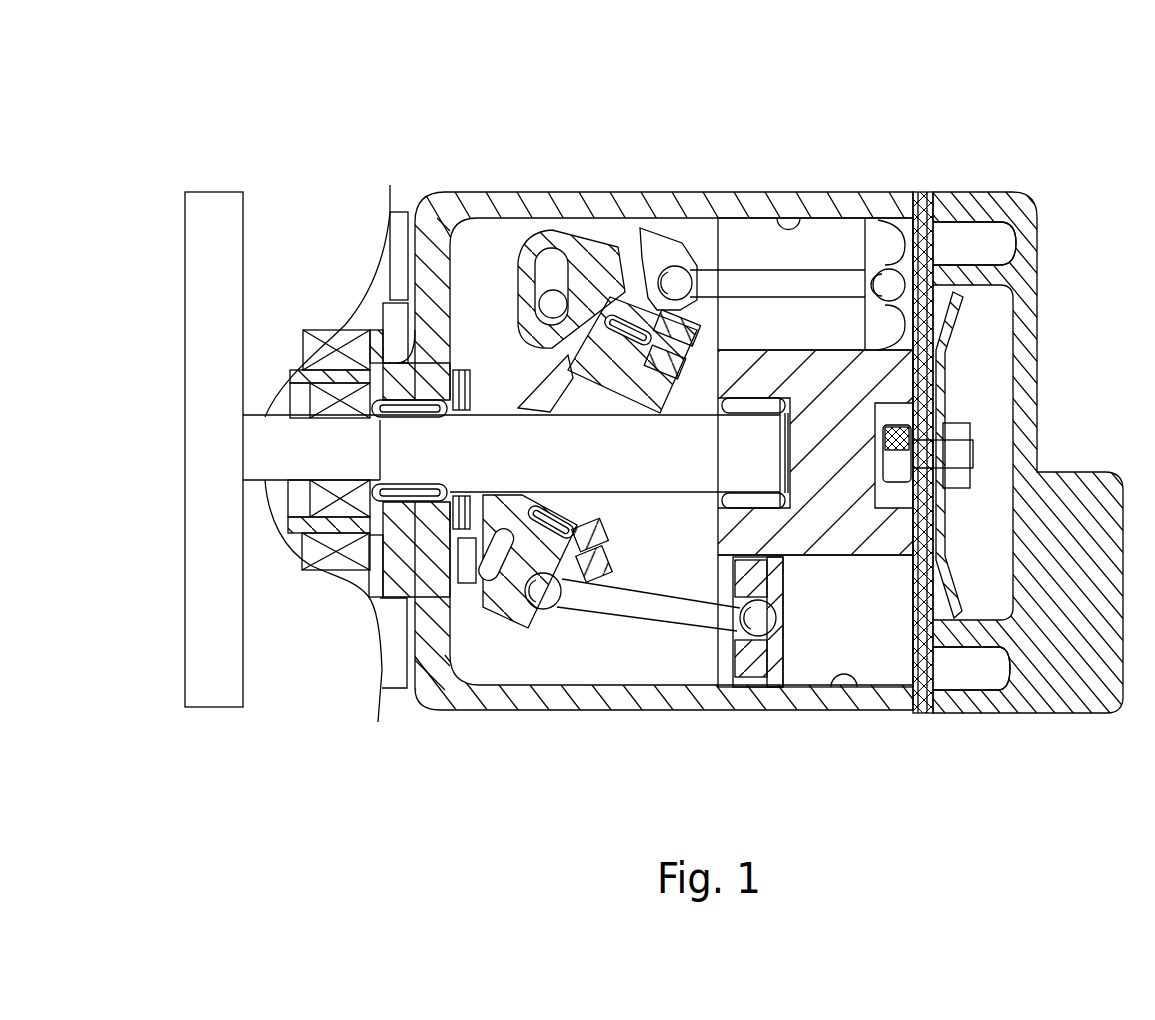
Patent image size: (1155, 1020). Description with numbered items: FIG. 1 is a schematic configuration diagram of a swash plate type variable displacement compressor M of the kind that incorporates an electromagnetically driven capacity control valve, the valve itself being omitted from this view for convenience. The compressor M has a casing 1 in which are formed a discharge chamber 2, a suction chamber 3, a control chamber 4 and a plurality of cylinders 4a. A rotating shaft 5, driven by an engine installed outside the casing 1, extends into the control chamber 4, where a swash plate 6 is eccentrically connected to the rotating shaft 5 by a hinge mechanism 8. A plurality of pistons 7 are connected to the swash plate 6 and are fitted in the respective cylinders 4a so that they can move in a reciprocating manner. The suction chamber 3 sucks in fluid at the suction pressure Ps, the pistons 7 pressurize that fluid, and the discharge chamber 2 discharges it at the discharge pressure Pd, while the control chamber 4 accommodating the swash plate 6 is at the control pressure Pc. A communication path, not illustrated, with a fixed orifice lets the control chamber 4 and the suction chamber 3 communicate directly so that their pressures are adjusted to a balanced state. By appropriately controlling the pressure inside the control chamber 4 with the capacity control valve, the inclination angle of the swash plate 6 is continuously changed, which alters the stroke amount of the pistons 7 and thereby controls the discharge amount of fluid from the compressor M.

The variable displacement compressor M is at (1020, 122).
The casing 1 is at (457, 186).
The discharge chamber 2 is at (985, 382).
The suction chamber 3 is at (1000, 243).
The control chamber 4 is at (762, 449).
The cylinders 4a is at (797, 230).
The rotating shaft 5 is at (476, 452).
The swash plate 6 is at (640, 300).
The pistons 7 is at (903, 192).
The hinge mechanism 8 is at (497, 368).